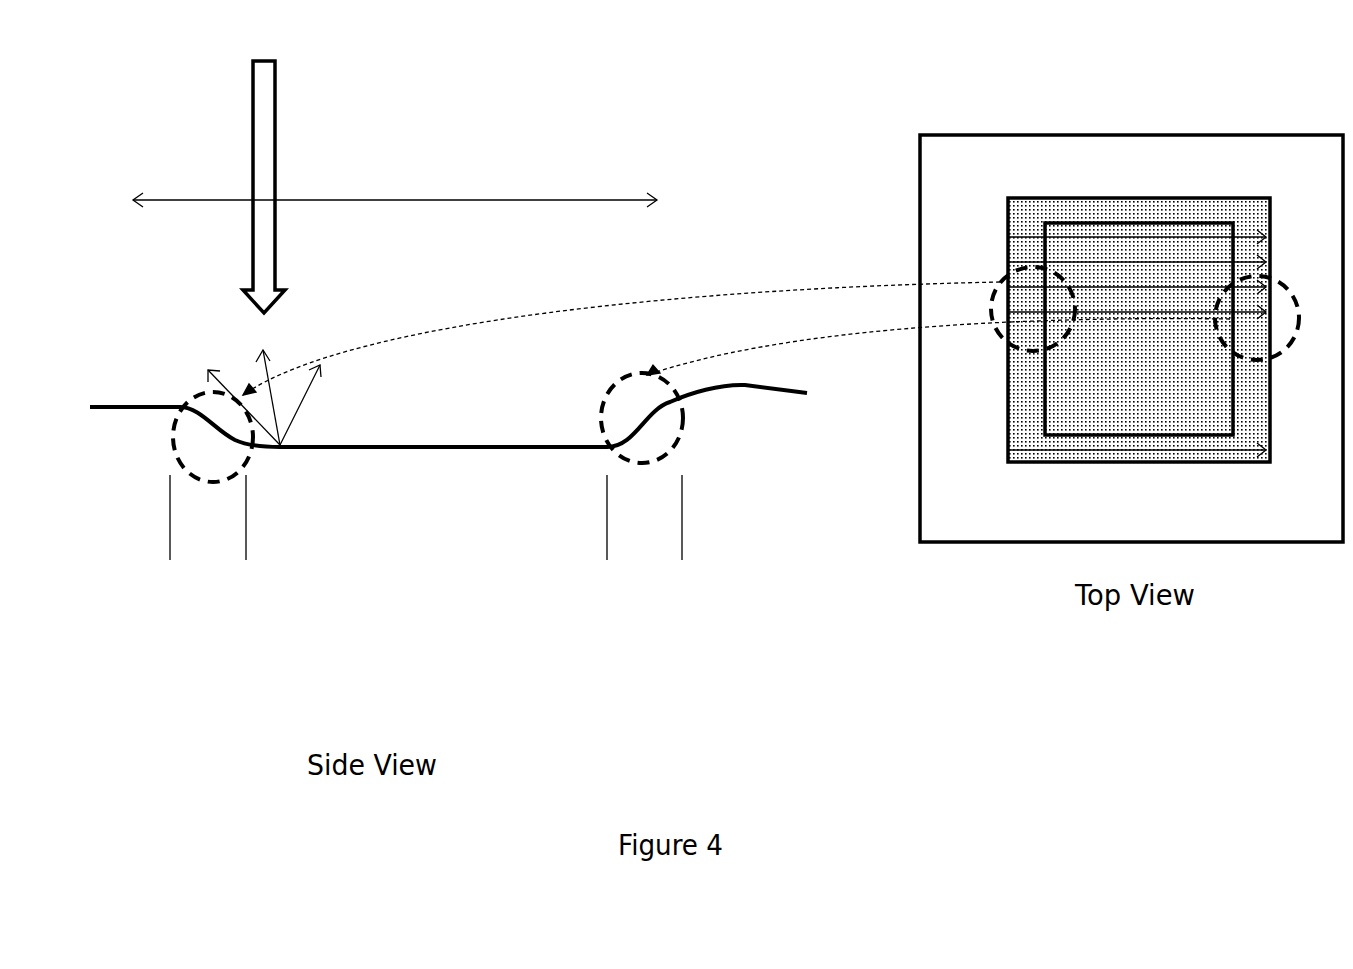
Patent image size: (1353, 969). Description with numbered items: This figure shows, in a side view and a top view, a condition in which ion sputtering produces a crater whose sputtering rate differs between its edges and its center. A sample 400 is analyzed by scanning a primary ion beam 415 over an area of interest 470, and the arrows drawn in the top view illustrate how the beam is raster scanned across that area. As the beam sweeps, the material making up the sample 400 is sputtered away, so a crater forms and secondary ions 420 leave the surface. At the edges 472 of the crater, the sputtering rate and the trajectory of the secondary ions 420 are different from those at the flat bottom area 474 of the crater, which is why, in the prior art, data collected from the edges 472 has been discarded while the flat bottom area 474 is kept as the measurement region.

The sample 400 is at (883, 135).
The primary ion beam 415 is at (265, 142).
The secondary ions 420 is at (281, 440).
The area of interest 470 is at (1027, 197).
The edges 472 is at (1027, 250).
The flat bottom area 474 is at (1167, 237).